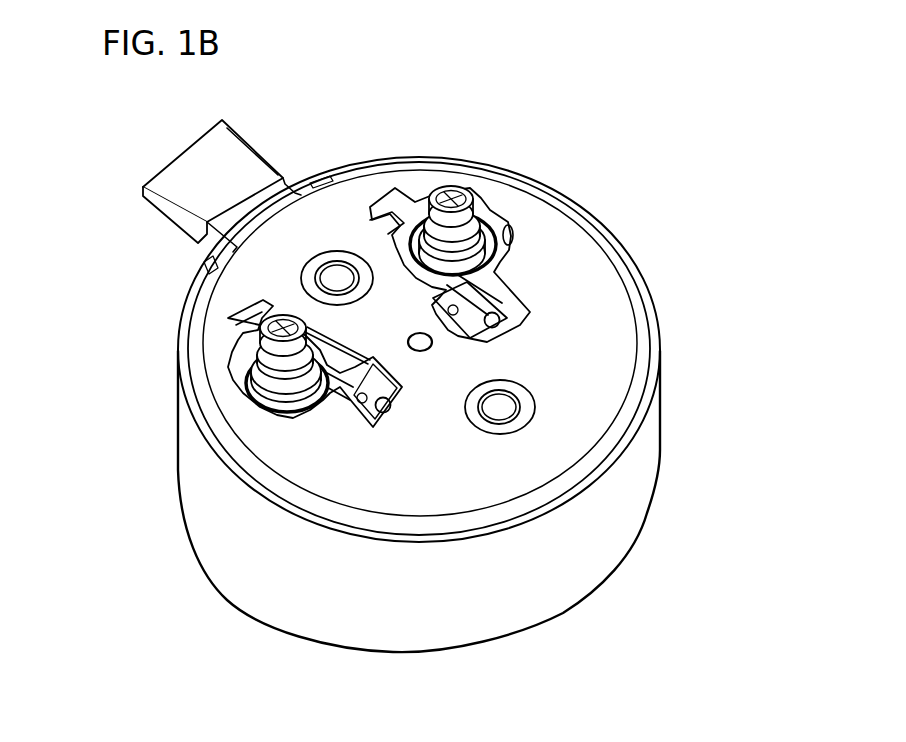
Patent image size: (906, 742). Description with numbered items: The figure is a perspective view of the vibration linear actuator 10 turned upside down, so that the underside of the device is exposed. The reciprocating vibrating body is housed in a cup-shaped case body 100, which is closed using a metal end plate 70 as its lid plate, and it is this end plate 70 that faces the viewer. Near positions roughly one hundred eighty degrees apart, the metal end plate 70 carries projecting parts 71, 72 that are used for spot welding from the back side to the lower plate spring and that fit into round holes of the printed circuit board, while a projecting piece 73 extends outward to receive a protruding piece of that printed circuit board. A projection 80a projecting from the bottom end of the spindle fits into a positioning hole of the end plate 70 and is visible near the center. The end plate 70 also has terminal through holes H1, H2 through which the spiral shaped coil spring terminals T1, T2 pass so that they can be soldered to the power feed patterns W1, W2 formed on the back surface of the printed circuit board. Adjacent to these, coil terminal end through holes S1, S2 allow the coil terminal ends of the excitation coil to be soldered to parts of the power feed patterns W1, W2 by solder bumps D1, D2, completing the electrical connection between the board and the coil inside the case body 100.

The vibration linear actuator 10 is at (127, 138).
The cup-shaped case body 100 is at (603, 549).
The metal end plate 70 is at (600, 320).
The projecting part 71 is at (508, 412).
The projecting part 72 is at (331, 280).
The projecting piece 73 is at (223, 165).
The projection 80a is at (426, 347).
The spiral shaped coil spring terminal T1 is at (262, 365).
The spiral shaped coil spring terminal T2 is at (460, 187).
The terminal through hole H1 is at (285, 392).
The terminal through hole H2 is at (510, 224).
The power feed pattern W1 is at (297, 402).
The power feed pattern W2 is at (504, 252).
The coil terminal end through hole S1 is at (364, 414).
The coil terminal end through hole S2 is at (437, 310).
The solder bump D1 is at (396, 408).
The solder bump D2 is at (500, 318).